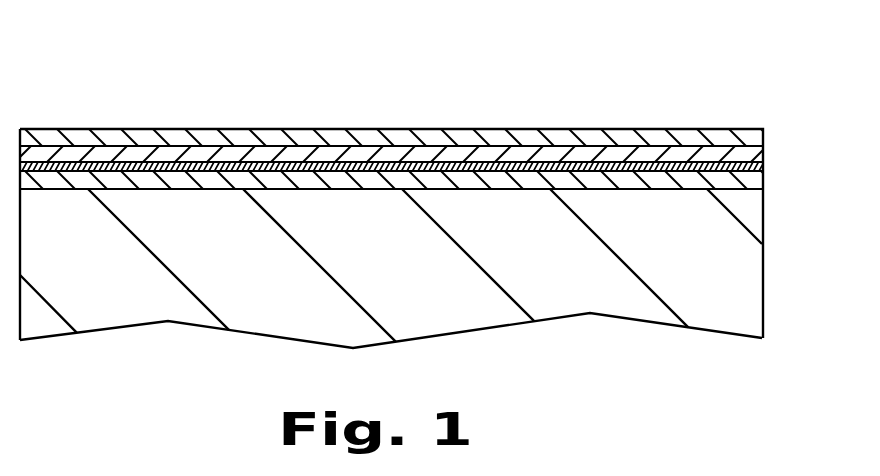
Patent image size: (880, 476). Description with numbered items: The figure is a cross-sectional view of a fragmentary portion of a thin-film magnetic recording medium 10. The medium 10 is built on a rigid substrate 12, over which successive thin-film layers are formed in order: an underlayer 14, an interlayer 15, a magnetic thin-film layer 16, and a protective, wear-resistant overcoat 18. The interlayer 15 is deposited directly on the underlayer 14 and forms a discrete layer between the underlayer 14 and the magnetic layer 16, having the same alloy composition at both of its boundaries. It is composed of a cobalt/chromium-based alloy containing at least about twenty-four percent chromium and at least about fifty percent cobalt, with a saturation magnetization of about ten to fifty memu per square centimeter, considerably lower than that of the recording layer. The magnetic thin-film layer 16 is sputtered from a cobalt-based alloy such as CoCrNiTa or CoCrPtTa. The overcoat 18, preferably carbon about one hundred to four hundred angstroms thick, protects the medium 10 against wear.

The thin-film medium 10 is at (320, 95).
The rigid substrate 12 is at (652, 313).
The underlayer 14 is at (750, 178).
The interlayer 15 is at (760, 165).
The magnetic thin-film layer 16 is at (755, 155).
The protective, wear-resistant overcoat 18 is at (112, 135).